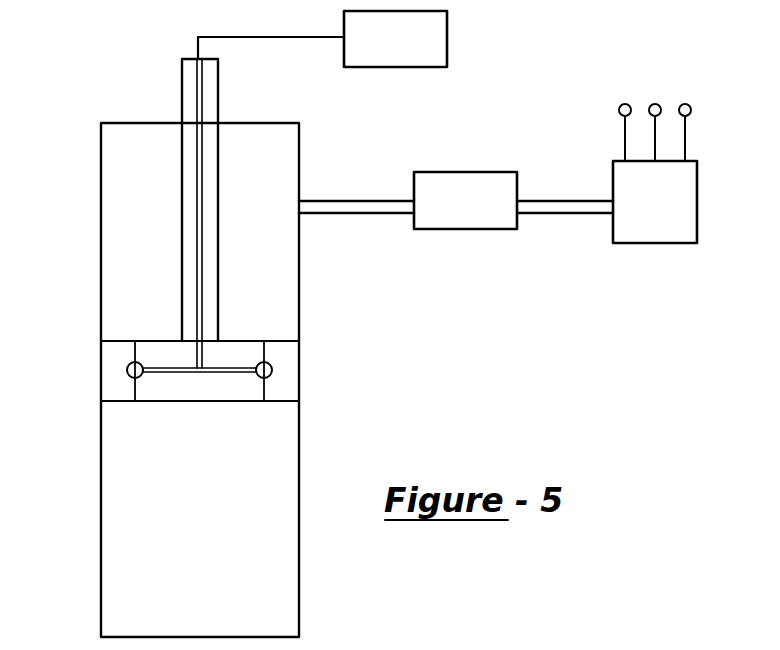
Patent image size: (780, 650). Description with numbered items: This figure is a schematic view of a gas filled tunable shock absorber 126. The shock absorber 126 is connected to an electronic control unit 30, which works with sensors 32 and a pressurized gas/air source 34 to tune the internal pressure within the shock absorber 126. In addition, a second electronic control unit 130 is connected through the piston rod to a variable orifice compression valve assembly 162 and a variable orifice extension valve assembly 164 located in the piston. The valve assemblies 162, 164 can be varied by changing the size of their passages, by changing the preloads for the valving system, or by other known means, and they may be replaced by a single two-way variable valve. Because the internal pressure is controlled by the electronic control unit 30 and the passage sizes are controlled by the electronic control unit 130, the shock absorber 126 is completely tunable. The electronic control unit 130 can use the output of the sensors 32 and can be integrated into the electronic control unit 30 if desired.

The tunable shock absorber 126 is at (127, 88).
The electronic control unit 130 is at (400, 50).
The pressurized gas/air source 34 is at (470, 213).
The electronic control unit 30 is at (664, 212).
The sensors 32 is at (656, 104).
The variable orifice compression valve assembly 162 is at (127, 370).
The variable orifice extension valve assembly 164 is at (272, 370).